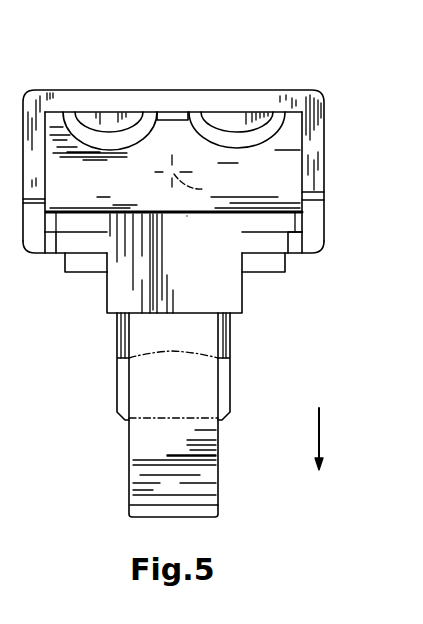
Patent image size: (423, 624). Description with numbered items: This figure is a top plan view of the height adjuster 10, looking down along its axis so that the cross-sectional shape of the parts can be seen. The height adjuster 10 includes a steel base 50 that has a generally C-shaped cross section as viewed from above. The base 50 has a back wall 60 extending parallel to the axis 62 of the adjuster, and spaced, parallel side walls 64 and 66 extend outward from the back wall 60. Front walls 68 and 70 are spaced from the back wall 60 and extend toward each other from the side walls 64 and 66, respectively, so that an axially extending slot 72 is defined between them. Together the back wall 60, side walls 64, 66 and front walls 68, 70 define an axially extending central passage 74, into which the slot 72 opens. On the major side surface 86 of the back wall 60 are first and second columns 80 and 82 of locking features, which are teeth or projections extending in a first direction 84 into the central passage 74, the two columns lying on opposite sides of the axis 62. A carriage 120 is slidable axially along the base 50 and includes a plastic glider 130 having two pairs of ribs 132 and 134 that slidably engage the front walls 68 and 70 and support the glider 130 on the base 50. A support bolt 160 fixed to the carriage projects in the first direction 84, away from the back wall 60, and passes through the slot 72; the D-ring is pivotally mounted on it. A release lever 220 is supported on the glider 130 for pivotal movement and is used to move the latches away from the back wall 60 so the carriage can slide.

The height adjuster 10 is at (355, 70).
The base 50 is at (284, 67).
The back wall 60 is at (170, 100).
The axis 62 is at (209, 188).
The side wall 64 is at (33, 148).
The side wall 66 is at (311, 142).
The front wall 68 is at (53, 245).
The front wall 70 is at (298, 243).
The slot 72 is at (242, 272).
The central passage 74 is at (196, 227).
The first column of locking features 80 is at (108, 100).
The second column of locking features 82 is at (234, 100).
The first direction 84 is at (323, 426).
The major side surface 86 is at (187, 112).
The carriage 120 is at (88, 400).
The glider 130 is at (100, 338).
The ribs 132 is at (75, 225).
The ribs 134 is at (273, 225).
The support bolt 160 is at (251, 343).
The release lever 220 is at (130, 483).